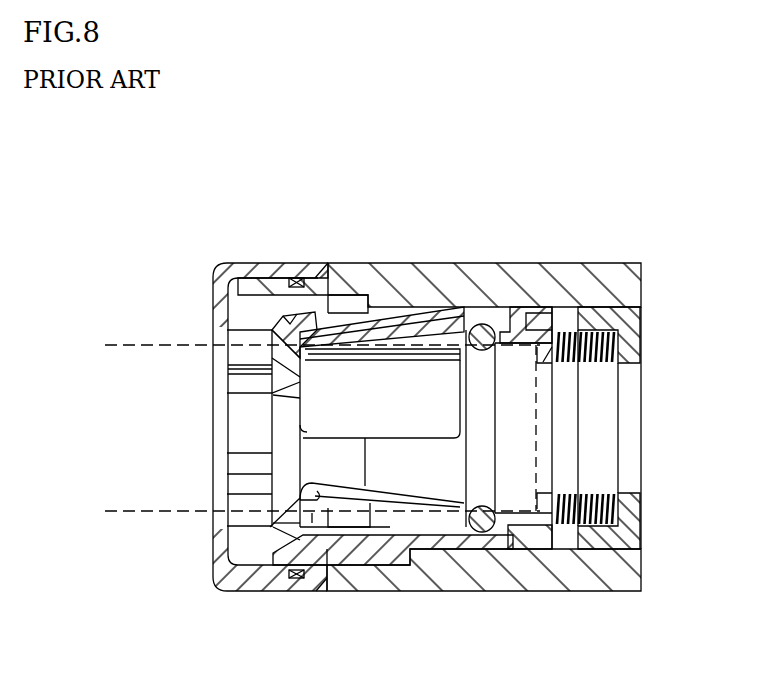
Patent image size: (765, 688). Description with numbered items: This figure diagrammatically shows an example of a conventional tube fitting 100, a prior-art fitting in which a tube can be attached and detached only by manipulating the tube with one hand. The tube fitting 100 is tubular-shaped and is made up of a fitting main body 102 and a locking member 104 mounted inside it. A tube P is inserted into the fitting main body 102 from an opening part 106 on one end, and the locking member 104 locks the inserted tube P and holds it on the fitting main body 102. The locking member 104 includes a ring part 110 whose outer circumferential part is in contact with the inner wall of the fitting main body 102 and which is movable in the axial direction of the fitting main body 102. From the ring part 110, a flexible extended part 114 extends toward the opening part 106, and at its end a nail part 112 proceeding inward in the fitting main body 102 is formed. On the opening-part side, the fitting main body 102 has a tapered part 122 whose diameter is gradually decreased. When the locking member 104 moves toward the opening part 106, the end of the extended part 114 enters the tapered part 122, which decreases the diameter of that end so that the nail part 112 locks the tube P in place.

The conventional tube fitting 100 is at (277, 226).
The fitting main body 102 is at (405, 272).
The locking member 104 is at (555, 428).
The opening part 106 is at (213, 424).
The ring part 110 is at (480, 308).
The nail part 112 is at (297, 360).
The extended part 114 is at (372, 330).
The tapered part 122 is at (279, 539).
The tube P is at (146, 512).